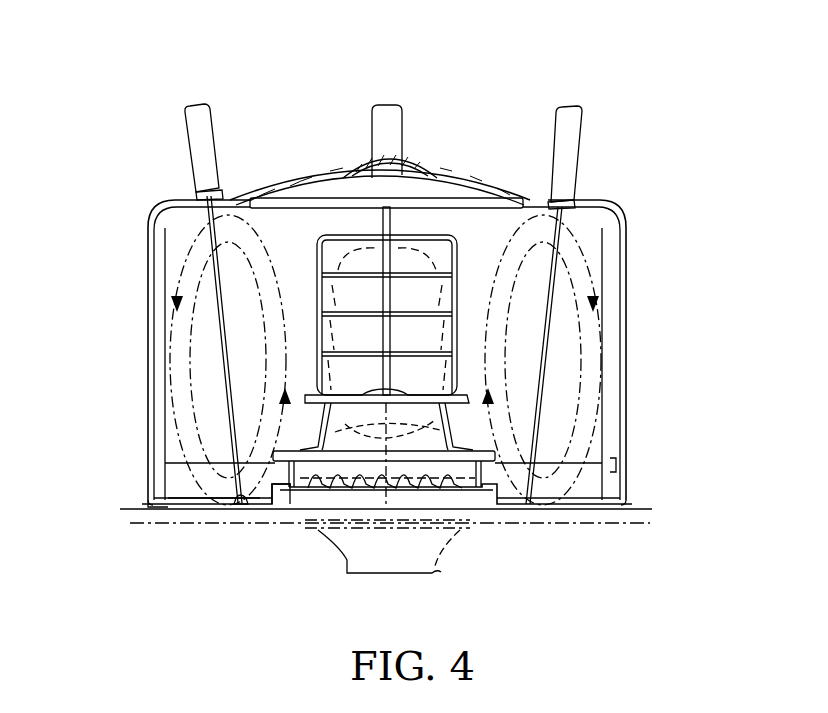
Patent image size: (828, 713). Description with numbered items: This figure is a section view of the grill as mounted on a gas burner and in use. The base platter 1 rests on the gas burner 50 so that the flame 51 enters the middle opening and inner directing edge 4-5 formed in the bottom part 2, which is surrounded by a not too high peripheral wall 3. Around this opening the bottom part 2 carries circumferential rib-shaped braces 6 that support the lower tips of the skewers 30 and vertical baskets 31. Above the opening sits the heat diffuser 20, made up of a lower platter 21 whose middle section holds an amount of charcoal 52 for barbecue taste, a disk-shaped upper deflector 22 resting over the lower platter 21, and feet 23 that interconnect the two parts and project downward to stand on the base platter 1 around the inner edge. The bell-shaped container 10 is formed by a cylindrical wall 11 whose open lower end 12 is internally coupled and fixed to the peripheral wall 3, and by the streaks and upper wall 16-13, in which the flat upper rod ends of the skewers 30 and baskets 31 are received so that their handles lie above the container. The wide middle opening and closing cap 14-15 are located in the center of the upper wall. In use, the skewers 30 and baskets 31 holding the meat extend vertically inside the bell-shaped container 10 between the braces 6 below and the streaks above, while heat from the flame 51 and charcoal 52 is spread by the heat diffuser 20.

The base platter 1 is at (230, 570).
The bottom part 2 is at (192, 509).
The peripheral wall 3 is at (157, 509).
The middle opening and inner directing edge 4-5 is at (285, 502).
The circumferential rib-shaped braces 6 is at (241, 500).
The bell-shaped container 10 is at (720, 255).
The cylindrical wall 11 is at (618, 305).
The open lower end 12 is at (596, 465).
The middle opening and closing cap 14-15 is at (472, 192).
The streaks and upper wall 16-13 is at (568, 207).
The heat diffuser 20 is at (261, 398).
The lower platter 21 is at (288, 448).
The upper deflector 22 is at (312, 397).
The feet 23 is at (320, 423).
The skewers 30 is at (230, 136).
The vertical baskets 31 is at (364, 115).
The gas burner 50 is at (383, 531).
The flame 51 is at (423, 493).
The charcoal 52 is at (410, 440).